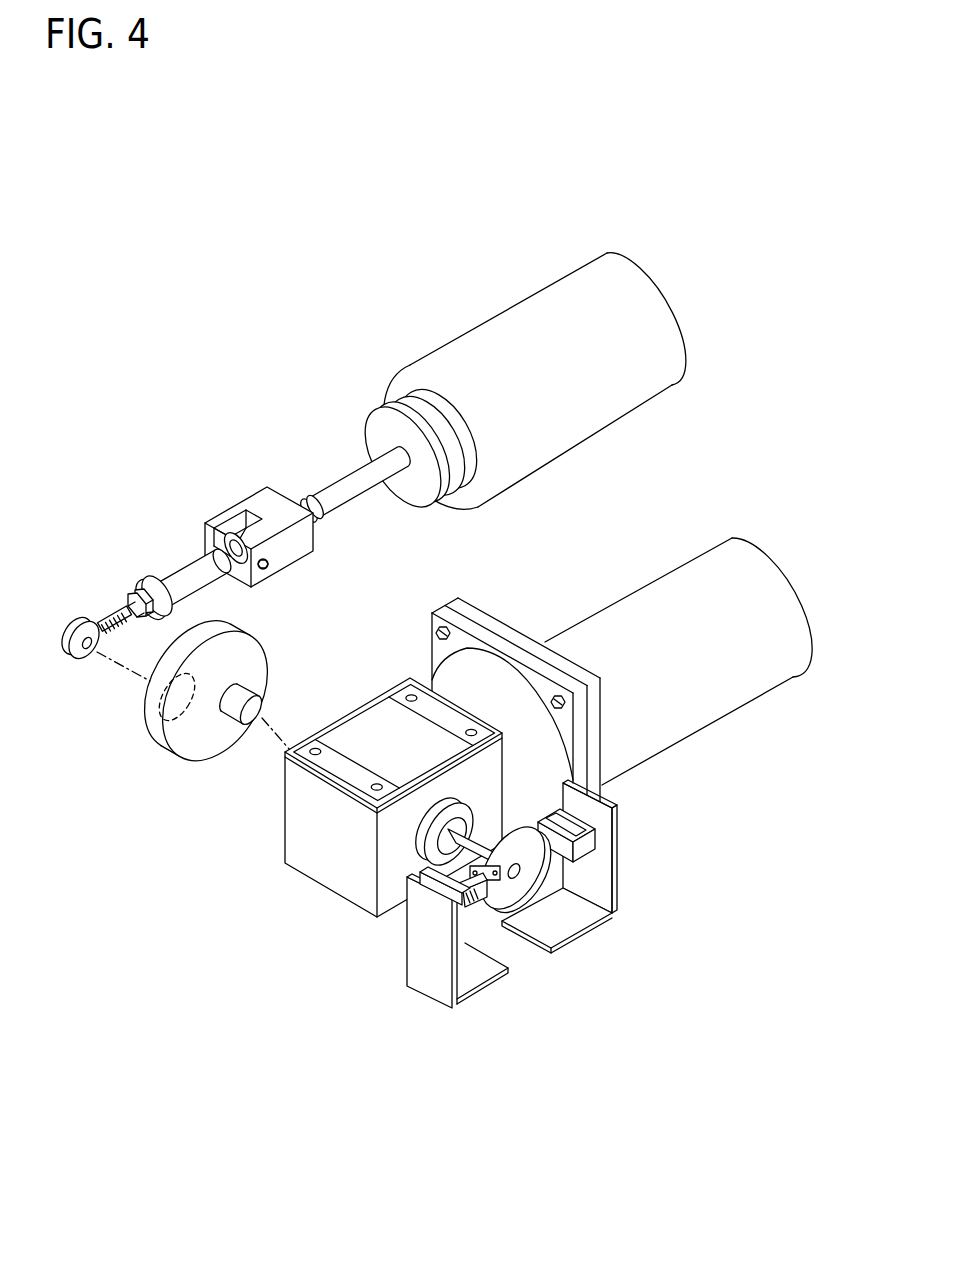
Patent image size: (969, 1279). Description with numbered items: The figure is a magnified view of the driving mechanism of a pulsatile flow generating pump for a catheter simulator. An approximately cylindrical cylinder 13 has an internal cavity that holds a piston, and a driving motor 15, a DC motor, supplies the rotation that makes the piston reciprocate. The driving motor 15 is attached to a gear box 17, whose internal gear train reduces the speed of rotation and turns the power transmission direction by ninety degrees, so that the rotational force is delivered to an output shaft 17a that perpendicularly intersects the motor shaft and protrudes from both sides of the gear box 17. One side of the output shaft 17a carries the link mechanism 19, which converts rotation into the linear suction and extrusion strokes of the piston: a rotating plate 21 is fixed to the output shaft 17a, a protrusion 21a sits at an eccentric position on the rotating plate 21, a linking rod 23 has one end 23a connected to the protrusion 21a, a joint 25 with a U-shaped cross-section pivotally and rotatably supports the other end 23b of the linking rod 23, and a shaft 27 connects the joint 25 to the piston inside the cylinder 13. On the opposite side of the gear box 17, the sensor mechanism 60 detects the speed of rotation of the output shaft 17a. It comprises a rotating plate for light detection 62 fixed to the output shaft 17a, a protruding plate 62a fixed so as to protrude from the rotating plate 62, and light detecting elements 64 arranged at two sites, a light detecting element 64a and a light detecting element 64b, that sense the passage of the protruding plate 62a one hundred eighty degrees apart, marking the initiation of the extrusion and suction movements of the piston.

The cylinder 13 is at (626, 280).
The driving motor 15 is at (753, 555).
The gear box 17 is at (295, 836).
The output shaft 17a is at (433, 830).
The link mechanism 19 is at (175, 527).
The rotating plate 21 is at (162, 733).
The protrusion 21a is at (152, 700).
The linking rod 23 is at (184, 573).
The one end of linking rod 23a is at (82, 618).
The other end of linking rod 23b is at (230, 533).
The joint 25 is at (268, 500).
The shaft 27 is at (350, 480).
The sensor mechanism 60 is at (465, 977).
The rotating plate for light detection 62 is at (522, 888).
The protruding plate 62a is at (467, 902).
The light detecting elements 64 is at (438, 908).
The light detecting element 64a is at (475, 947).
The light detecting element 64b is at (573, 843).